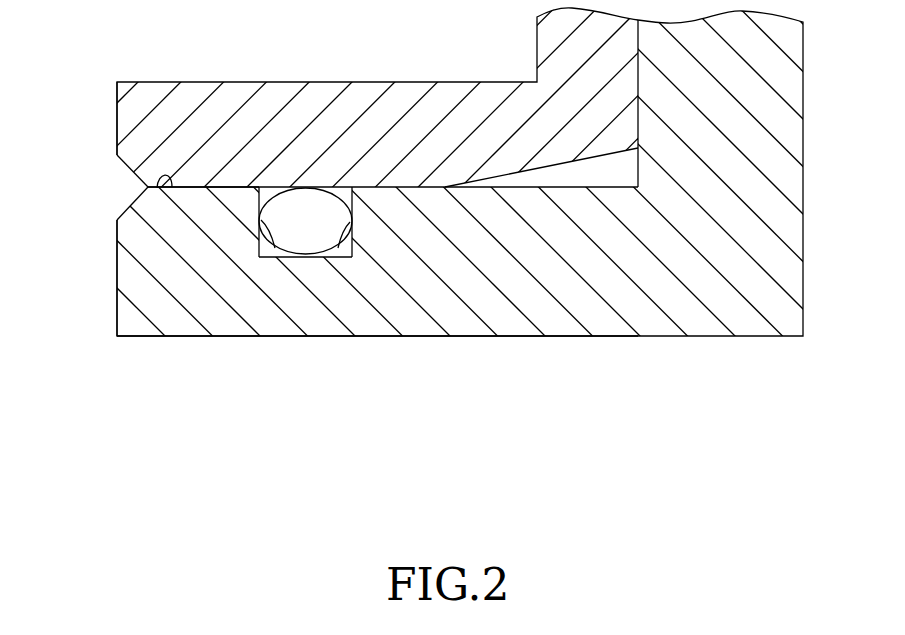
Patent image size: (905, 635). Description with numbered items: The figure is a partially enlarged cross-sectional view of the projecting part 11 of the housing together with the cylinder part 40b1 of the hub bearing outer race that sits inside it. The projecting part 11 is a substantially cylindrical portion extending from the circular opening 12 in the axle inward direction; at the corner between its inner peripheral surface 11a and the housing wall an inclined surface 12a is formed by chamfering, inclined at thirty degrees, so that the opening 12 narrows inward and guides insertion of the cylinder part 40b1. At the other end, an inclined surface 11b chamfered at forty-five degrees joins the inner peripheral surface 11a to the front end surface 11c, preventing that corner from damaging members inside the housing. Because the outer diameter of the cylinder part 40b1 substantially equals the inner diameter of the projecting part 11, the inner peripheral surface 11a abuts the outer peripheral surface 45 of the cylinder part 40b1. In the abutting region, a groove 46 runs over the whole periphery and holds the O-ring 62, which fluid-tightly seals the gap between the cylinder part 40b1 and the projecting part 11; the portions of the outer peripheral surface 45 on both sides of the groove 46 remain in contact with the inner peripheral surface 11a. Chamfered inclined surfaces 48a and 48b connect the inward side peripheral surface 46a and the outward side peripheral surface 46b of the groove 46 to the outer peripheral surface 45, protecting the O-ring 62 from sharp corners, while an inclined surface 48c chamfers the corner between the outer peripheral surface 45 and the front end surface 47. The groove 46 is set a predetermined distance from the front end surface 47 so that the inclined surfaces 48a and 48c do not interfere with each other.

The projecting part 11 is at (230, 97).
The inner peripheral surface 11a is at (196, 196).
The inclined surface 11b is at (117, 168).
The front end surface 11c is at (117, 113).
The opening 12 is at (562, 163).
The inclined surface 12a is at (541, 167).
The outer peripheral surface 45 is at (157, 188).
The groove 46 is at (270, 217).
The side peripheral surface 46a is at (274, 257).
The side peripheral surface 46b is at (340, 255).
The front end surface 47 is at (117, 282).
The inclined surface 48a is at (257, 197).
The inclined surface 48b is at (357, 197).
The inclined surface 48c is at (118, 215).
The cylinder part 40b1 is at (227, 320).
The O-ring 62 is at (314, 240).